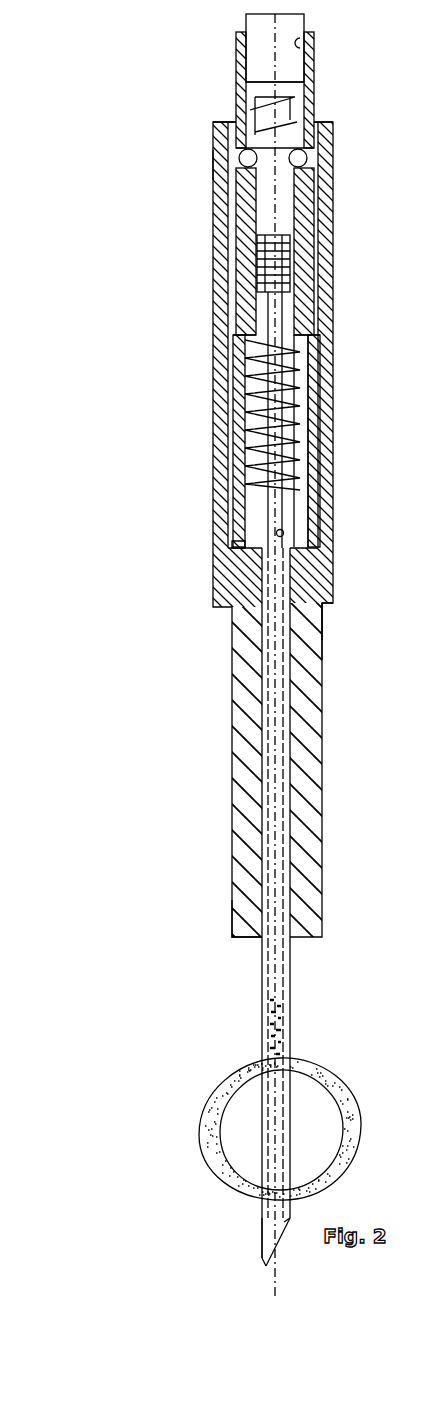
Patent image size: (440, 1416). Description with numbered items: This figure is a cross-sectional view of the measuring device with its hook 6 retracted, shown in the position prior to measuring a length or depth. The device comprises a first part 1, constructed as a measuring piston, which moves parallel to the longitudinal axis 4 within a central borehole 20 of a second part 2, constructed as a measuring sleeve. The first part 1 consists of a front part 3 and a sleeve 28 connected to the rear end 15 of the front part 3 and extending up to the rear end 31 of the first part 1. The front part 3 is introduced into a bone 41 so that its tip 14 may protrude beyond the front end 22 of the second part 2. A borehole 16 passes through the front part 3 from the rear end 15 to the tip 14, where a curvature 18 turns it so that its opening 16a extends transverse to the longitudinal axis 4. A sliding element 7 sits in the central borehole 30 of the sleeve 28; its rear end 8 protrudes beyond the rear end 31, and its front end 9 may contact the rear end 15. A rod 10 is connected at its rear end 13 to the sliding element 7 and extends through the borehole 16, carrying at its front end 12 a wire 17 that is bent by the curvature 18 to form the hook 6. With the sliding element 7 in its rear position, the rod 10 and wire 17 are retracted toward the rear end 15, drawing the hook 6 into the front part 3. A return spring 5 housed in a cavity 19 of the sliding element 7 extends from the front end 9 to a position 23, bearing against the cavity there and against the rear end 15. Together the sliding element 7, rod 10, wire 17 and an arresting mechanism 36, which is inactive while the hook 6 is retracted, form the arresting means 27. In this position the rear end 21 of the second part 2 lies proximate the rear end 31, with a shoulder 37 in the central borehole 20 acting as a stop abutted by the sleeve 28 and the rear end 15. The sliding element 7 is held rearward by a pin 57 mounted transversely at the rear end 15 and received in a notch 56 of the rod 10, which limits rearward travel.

The first part 1 is at (335, 545).
The second part 2 is at (300, 783).
The front part 3 is at (322, 630).
The longitudinal axis 4 is at (275, 958).
The return spring 5 is at (232, 433).
The hook 6 is at (288, 1222).
The sliding element 7 is at (318, 292).
The rear end of sliding element 8 is at (313, 32).
The front end of sliding element 9 is at (320, 445).
The rod 10 is at (240, 384).
The front end of rod 12 is at (278, 987).
The rear end of rod 13 is at (245, 325).
The tip 14 is at (270, 1247).
The rear end of front part 15 is at (297, 485).
The borehole 16 is at (267, 493).
The opening 16a is at (282, 1222).
The wire 17 is at (283, 1062).
The curvature 18 is at (290, 1228).
The cavity 19 is at (258, 365).
The central borehole 20 is at (231, 512).
The rear end of second part 21 is at (220, 138).
The front end of second part 22 is at (252, 922).
The position 23 is at (312, 330).
The arresting means 27 is at (232, 89).
The sleeve 28 is at (305, 355).
The central borehole of sleeve 30 is at (305, 460).
The rear end of first part 31 is at (313, 121).
The arresting mechanism 36 is at (216, 163).
The shoulder 37 is at (325, 542).
The bone 41 is at (343, 1082).
The notch 56 is at (276, 526).
The pin 57 is at (268, 548).